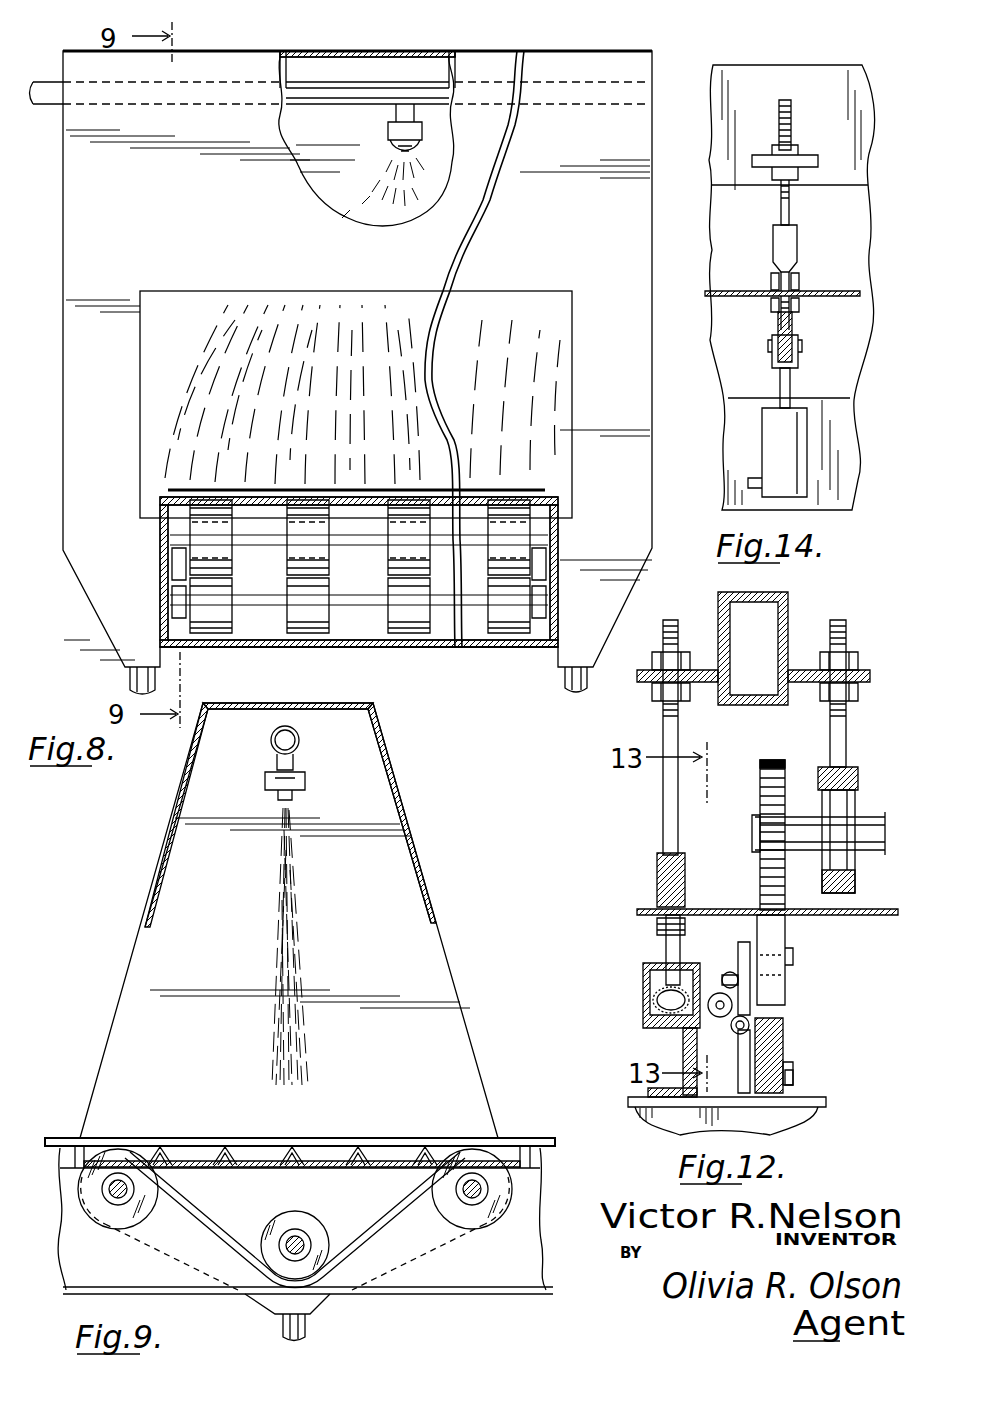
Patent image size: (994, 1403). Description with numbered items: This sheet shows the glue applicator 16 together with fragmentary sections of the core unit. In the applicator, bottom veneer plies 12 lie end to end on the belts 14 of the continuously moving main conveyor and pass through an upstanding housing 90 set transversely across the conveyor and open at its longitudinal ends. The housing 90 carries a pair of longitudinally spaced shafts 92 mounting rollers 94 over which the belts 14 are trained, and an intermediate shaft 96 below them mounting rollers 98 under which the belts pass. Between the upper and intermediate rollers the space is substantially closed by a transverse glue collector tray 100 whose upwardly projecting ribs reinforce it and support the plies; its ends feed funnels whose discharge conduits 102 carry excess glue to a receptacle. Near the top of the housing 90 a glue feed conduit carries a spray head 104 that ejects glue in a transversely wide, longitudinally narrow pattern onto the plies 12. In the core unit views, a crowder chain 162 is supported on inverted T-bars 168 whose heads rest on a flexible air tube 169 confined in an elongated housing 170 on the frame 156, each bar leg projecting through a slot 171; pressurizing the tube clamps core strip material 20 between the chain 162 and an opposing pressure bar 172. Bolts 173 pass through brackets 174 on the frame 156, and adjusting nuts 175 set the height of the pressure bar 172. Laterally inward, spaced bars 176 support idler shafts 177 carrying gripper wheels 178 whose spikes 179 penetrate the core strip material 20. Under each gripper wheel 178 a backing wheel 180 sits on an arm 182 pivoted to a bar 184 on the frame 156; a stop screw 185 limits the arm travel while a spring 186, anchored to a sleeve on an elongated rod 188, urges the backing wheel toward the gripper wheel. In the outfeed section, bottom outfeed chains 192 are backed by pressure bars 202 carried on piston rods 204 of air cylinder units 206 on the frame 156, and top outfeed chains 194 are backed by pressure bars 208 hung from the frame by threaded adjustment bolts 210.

In FIG. 8, the bottom veneer plies 12 is at (266, 488).
In FIG. 9, the bottom veneer plies 12 is at (198, 1136).
In FIG. 9, the belts 14 is at (228, 1236).
In FIG. 8, the glue applicator 16 is at (96, 650).
In FIG. 9, the glue applicator 16 is at (114, 871).
In FIG. 14, the veneer core strip material 20 is at (706, 293).
In FIG. 12, the veneer core strip material 20 is at (893, 916).
In FIG. 8, the housing 90 is at (552, 56).
In FIG. 9, the housing 90 is at (183, 803).
In FIG. 8, the shafts 92 is at (264, 540).
In FIG. 9, the shafts 92 is at (462, 1194).
In FIG. 8, the rollers 94 is at (322, 535).
In FIG. 9, the rollers 94 is at (488, 1232).
In FIG. 8, the intermediate shaft 96 is at (272, 600).
In FIG. 9, the intermediate shaft 96 is at (282, 1243).
In FIG. 8, the rollers 98 is at (324, 605).
In FIG. 9, the rollers 98 is at (318, 1238).
In FIG. 8, the glue collector tray 100 is at (560, 500).
In FIG. 9, the glue collector tray 100 is at (392, 1160).
In FIG. 8, the discharge conduits 102 is at (565, 680).
In FIG. 9, the discharge conduits 102 is at (308, 1320).
In FIG. 8, the spray head 104 is at (387, 135).
In FIG. 9, the spray head 104 is at (270, 786).
In FIG. 14, the frame 156 is at (730, 440).
In FIG. 12, the frame 156 is at (800, 1118).
In FIG. 12, the crowder chains 162 is at (660, 934).
In FIG. 12, the inverted T-bars 168 is at (648, 968).
In FIG. 12, the air tube 169 is at (652, 996).
In FIG. 12, the housing 170 is at (650, 1014).
In FIG. 12, the slot 171 is at (680, 966).
In FIG. 12, the pressure bar 172 is at (657, 895).
In FIG. 12, the bolts 173 is at (663, 806).
In FIG. 12, the brackets 174 is at (800, 684).
In FIG. 12, the adjusting nuts 175 is at (845, 688).
In FIG. 12, the bars 176 is at (855, 772).
In FIG. 12, the idler shafts 177 is at (866, 852).
In FIG. 12, the gripper wheel 178 is at (760, 790).
In FIG. 12, the spikes or sharpened ribs 179 is at (772, 758).
In FIG. 12, the backing wheel 180 is at (782, 928).
In FIG. 12, the arm 182 is at (744, 946).
In FIG. 12, the bar 184 is at (778, 1044).
In FIG. 12, the stop screw 185 is at (785, 1030).
In FIG. 12, the spring 186 is at (738, 978).
In FIG. 12, the rod 188 is at (735, 1002).
In FIG. 14, the bottom outfeed chains 192 is at (800, 305).
In FIG. 14, the top outfeed chains 194 is at (800, 286).
In FIG. 14, the pressure bars 202 is at (778, 330).
In FIG. 14, the piston rods 204 is at (790, 388).
In FIG. 14, the air cylinder units 206 is at (800, 432).
In FIG. 14, the pressure bars 208 is at (773, 248).
In FIG. 14, the threaded adjustment bolts 210 is at (780, 216).